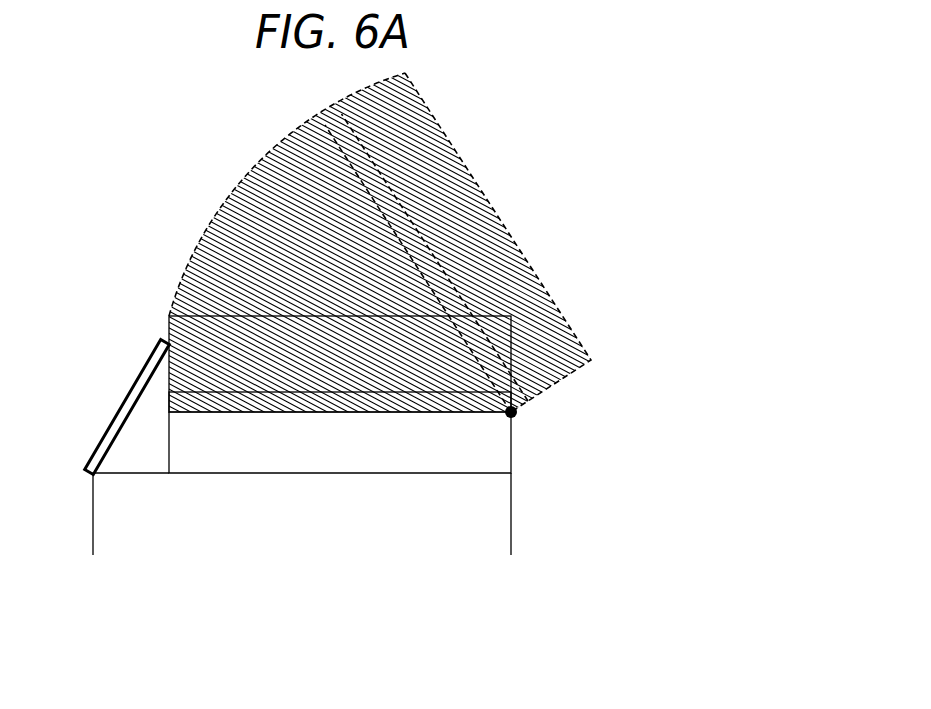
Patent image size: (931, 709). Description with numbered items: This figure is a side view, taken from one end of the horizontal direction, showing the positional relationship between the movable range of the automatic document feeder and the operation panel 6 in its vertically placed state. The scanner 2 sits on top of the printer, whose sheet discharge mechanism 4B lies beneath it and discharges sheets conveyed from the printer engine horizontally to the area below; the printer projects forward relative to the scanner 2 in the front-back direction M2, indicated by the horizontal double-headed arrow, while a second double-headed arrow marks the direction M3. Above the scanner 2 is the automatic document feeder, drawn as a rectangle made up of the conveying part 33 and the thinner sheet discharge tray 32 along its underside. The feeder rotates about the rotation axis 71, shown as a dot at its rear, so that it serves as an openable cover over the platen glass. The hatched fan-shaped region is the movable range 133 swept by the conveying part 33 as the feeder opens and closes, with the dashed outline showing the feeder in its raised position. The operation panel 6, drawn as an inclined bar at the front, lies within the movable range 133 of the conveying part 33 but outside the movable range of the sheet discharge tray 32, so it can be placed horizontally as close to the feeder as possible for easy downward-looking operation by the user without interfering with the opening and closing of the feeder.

The movable range 133 is at (228, 281).
The conveying part 33 is at (311, 313).
The sheet discharge tray 32 is at (422, 254).
The rotation axis 71 is at (518, 413).
The scanner 2 is at (513, 458).
The sheet discharge mechanism 4B is at (513, 517).
The operation panel 6 is at (150, 377).
The front-back direction M2 is at (283, 538).
The vertical movement direction M3 is at (324, 497).